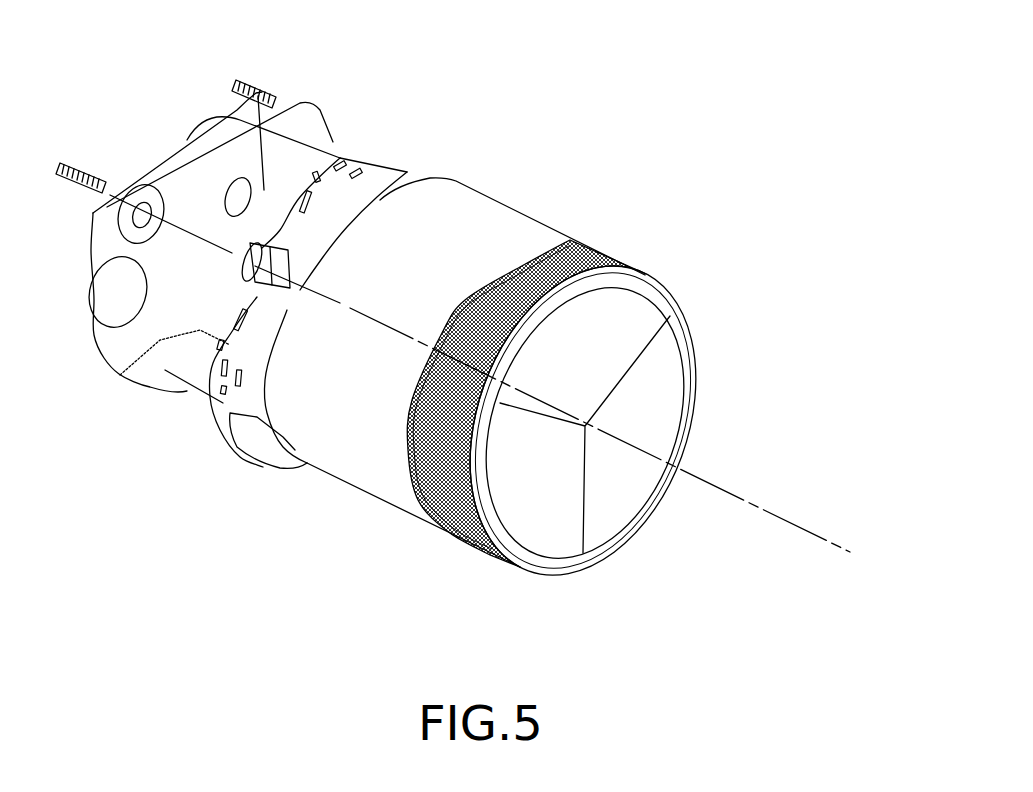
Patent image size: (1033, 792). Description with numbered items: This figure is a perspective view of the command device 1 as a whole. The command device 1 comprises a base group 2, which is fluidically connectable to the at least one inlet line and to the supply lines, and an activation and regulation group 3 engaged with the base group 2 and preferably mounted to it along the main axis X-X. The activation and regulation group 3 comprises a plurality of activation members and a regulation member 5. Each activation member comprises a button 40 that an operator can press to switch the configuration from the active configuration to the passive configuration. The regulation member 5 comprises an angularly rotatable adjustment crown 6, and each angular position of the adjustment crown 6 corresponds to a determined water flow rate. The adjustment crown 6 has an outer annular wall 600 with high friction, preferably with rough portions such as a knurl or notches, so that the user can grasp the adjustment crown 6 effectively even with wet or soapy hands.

The command device 1 is at (757, 100).
The base group 2 is at (358, 92).
The activation and regulation group 3 is at (540, 180).
The regulation member 5 is at (785, 410).
The adjustment crown 6 is at (722, 307).
The button 40 is at (581, 330).
The outer annular wall 600 is at (440, 495).